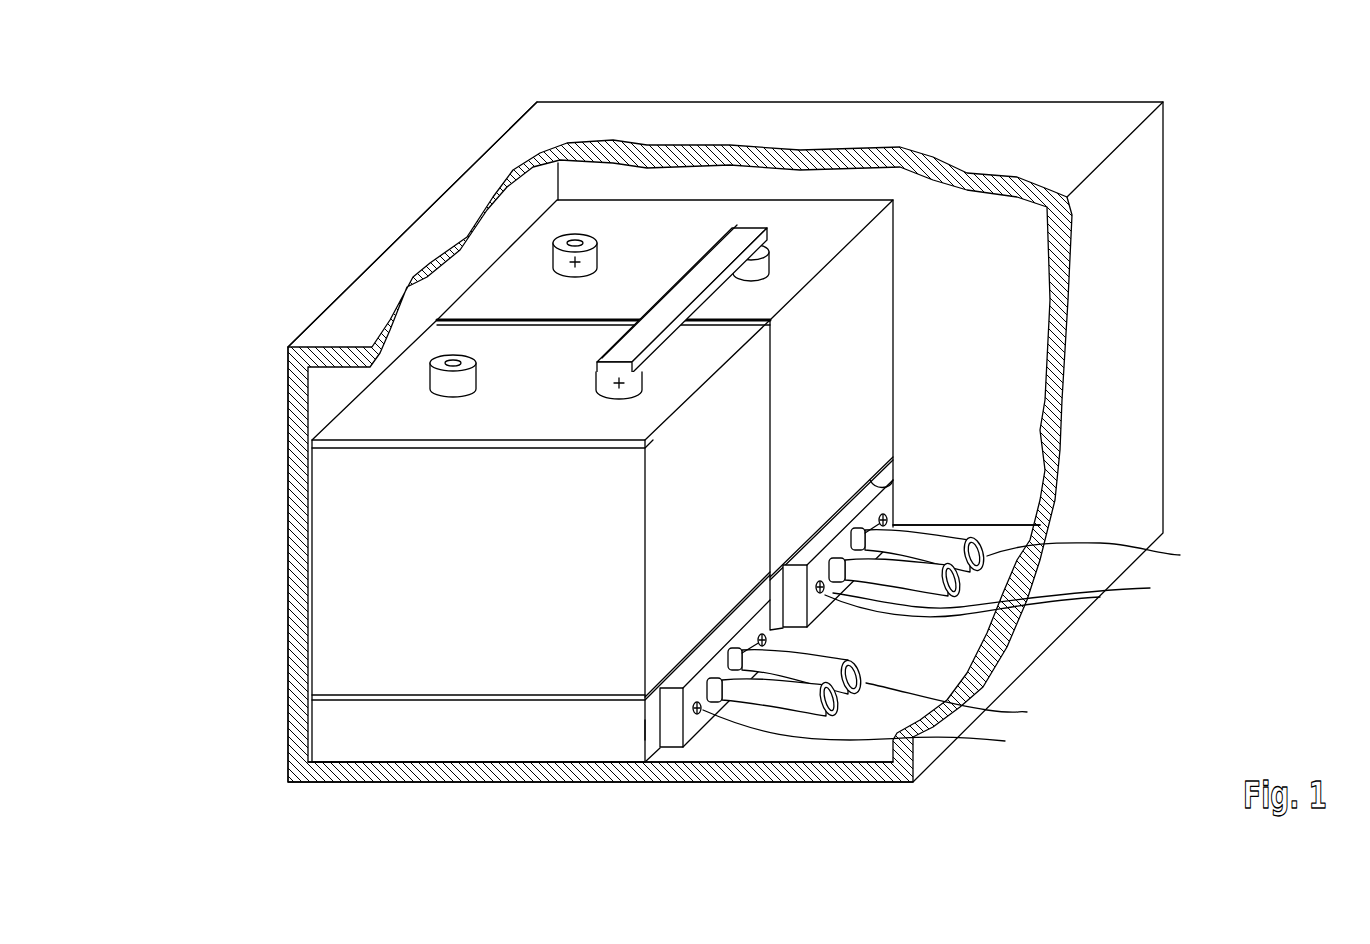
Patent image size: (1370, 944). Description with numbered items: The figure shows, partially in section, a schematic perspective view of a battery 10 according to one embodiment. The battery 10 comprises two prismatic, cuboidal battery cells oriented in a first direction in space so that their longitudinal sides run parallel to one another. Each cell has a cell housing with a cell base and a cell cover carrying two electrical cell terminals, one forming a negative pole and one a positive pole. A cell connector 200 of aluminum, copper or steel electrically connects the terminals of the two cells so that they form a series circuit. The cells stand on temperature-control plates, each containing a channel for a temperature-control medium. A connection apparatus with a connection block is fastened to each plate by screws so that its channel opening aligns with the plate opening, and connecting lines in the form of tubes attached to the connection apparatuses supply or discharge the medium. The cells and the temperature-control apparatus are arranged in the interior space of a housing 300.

The battery 10 is at (360, 205).
The cell connector 200 is at (668, 290).
The housing 300 is at (1133, 226).